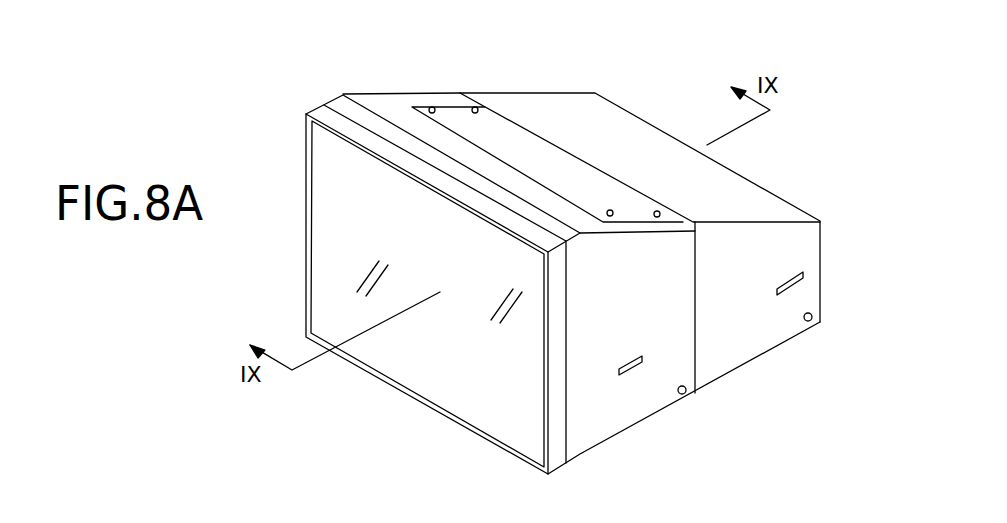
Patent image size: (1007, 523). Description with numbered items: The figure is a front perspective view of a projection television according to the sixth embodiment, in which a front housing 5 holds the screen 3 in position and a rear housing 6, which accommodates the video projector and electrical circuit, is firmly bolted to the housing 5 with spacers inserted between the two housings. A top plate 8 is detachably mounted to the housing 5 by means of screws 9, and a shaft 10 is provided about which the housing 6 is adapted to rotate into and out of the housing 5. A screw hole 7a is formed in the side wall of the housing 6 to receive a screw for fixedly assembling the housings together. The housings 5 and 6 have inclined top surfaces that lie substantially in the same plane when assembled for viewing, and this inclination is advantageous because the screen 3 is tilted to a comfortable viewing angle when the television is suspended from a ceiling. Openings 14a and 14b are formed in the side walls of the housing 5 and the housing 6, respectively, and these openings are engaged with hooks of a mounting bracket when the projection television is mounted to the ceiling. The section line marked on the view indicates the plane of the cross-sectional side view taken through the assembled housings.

The screen 3 is at (422, 378).
The housing 5 is at (381, 104).
The housing 6 is at (768, 201).
The screw hole 7a is at (807, 322).
The top plate 8 is at (498, 131).
The screw 9 is at (432, 107).
The shaft 10 is at (680, 396).
The opening 14a is at (627, 358).
The opening 14b is at (778, 278).